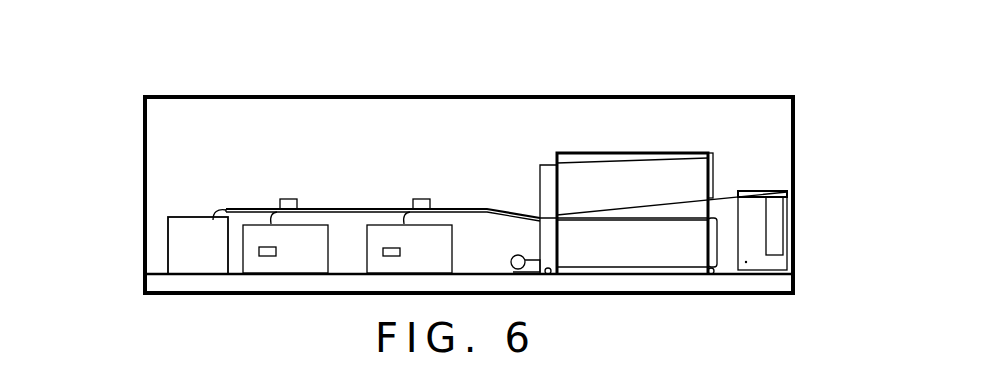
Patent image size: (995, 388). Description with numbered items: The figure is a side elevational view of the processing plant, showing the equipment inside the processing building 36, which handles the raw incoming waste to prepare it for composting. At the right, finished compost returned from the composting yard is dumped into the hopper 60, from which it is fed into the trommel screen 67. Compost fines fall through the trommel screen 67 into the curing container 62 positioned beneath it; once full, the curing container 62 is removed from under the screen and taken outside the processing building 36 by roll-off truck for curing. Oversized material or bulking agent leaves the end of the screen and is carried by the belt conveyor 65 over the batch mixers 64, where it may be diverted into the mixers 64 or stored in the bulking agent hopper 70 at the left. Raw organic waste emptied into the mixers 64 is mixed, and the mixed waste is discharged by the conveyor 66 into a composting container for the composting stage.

The processing building 36 is at (413, 162).
The hopper 60 is at (785, 190).
The curing container 62 is at (542, 247).
The batch mixer 64 is at (400, 240).
The belt conveyor 65 is at (265, 208).
The conveyor 66 is at (400, 253).
The trommel screen 67 is at (542, 165).
The bulking agent hopper 70 is at (168, 245).